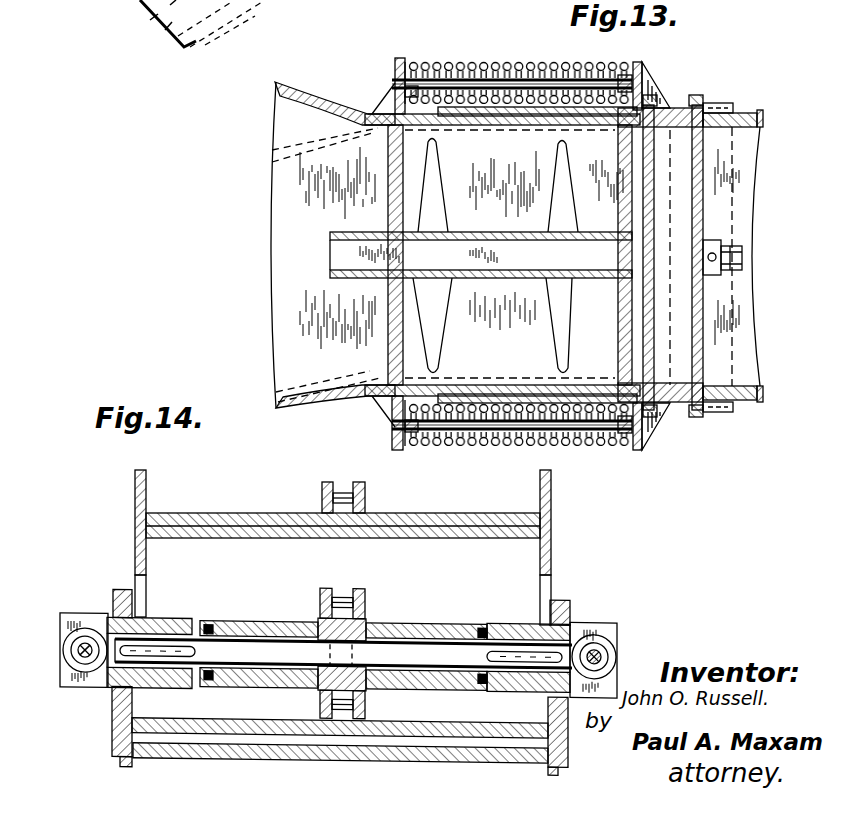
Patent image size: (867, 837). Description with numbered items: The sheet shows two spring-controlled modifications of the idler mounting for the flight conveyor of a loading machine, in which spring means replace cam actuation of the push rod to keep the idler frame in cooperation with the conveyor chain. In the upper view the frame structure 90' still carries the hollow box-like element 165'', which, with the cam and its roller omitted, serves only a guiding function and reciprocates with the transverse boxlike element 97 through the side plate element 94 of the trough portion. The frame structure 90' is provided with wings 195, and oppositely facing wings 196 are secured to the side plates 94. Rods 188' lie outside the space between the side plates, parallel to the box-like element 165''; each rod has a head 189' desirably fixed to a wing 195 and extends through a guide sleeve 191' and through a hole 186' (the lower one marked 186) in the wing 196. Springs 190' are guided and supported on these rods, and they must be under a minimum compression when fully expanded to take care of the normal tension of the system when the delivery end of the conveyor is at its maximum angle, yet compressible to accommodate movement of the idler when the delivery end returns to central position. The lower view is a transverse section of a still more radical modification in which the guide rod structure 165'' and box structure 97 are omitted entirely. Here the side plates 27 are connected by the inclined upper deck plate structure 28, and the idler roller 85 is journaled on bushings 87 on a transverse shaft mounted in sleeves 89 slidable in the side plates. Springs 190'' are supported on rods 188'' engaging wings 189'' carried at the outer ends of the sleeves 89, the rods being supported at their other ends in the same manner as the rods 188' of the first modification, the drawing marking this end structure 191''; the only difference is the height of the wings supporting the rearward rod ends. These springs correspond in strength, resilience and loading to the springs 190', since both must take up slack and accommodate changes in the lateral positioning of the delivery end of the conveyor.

In FIG. 13, the side plate element 94 is at (327, 100).
In FIG. 13, the wing 196 is at (398, 58).
In FIG. 13, the hole 186' is at (431, 50).
In FIG. 13, the nut 186 is at (393, 438).
In FIG. 13, the guide sleeve 191' is at (435, 248).
In FIG. 13, the spring 190' is at (512, 248).
In FIG. 13, the rod 188' is at (519, 257).
In FIG. 13, the head 189' is at (672, 260).
In FIG. 13, the wing 195 is at (660, 78).
In FIG. 13, the frame structure 90' is at (680, 256).
In FIG. 13, the boxlike element 97 is at (700, 182).
In FIG. 13, the box-like element 165'' is at (518, 256).
In FIG. 14, the side plate 27 is at (136, 493).
In FIG. 14, the upper deck plate structure 28 is at (447, 507).
In FIG. 14, the idler roller 85 is at (338, 610).
In FIG. 14, the bushing 87 is at (263, 627).
In FIG. 14, the sleeve 89 is at (184, 607).
In FIG. 14, the rod 188'' is at (345, 625).
In FIG. 14, the wing 189'' is at (338, 627).
In FIG. 14, the spring 190'' is at (352, 623).
In FIG. 14, the knurled surface 191'' is at (325, 628).